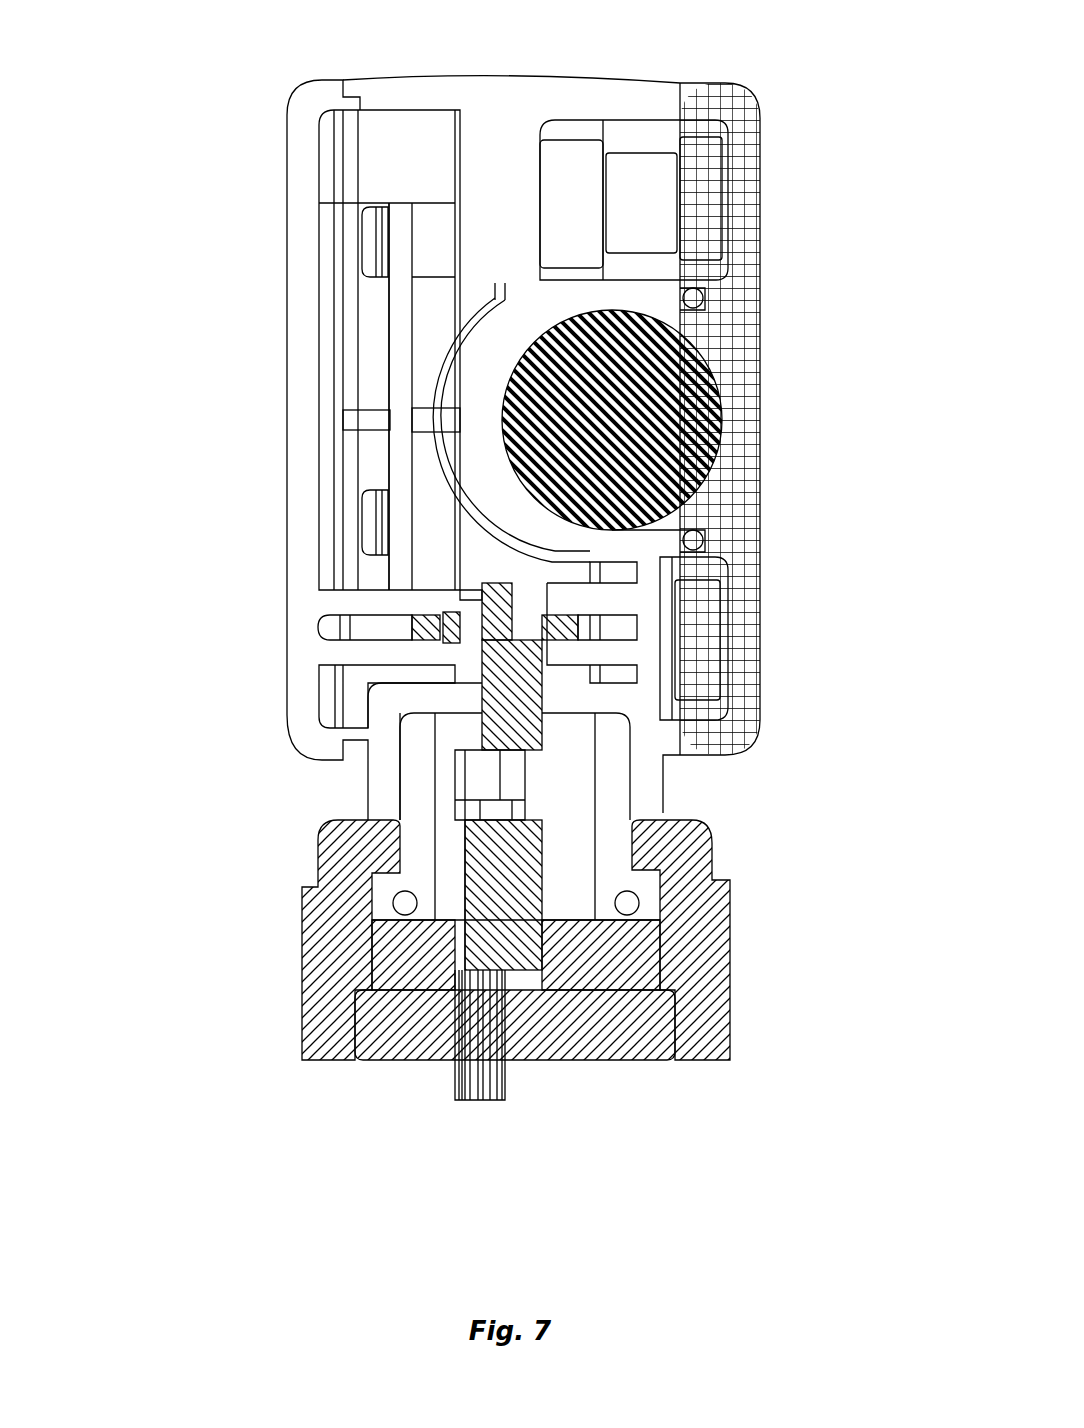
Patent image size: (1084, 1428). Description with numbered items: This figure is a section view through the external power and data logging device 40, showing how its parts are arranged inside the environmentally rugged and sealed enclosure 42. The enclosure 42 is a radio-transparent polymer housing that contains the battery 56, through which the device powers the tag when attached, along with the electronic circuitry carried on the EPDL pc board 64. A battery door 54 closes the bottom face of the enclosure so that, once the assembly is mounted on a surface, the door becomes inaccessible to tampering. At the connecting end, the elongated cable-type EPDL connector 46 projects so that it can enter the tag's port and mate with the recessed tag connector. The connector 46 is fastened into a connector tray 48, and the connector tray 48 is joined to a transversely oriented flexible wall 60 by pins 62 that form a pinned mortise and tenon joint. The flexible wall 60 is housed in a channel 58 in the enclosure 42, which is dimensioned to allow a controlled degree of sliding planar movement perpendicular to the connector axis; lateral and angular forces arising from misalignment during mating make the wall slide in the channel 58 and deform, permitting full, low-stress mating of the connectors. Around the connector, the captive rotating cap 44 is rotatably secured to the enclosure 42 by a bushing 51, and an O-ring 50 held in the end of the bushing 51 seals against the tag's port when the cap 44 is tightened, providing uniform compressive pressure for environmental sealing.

The external power and data logging device 40 is at (200, 192).
The enclosure 42 is at (202, 375).
The captive rotating cap 44 is at (300, 960).
The EPDL connector 46 is at (490, 1100).
The connector tray 48 is at (530, 975).
The O-ring 50 is at (405, 915).
The bushing 51 is at (415, 862).
The battery door 54 is at (758, 140).
The battery 56 is at (680, 372).
The channel 58 is at (412, 648).
The flexible wall 60 is at (445, 624).
The pins 62 is at (460, 598).
The EPDL pc board 64 is at (392, 458).